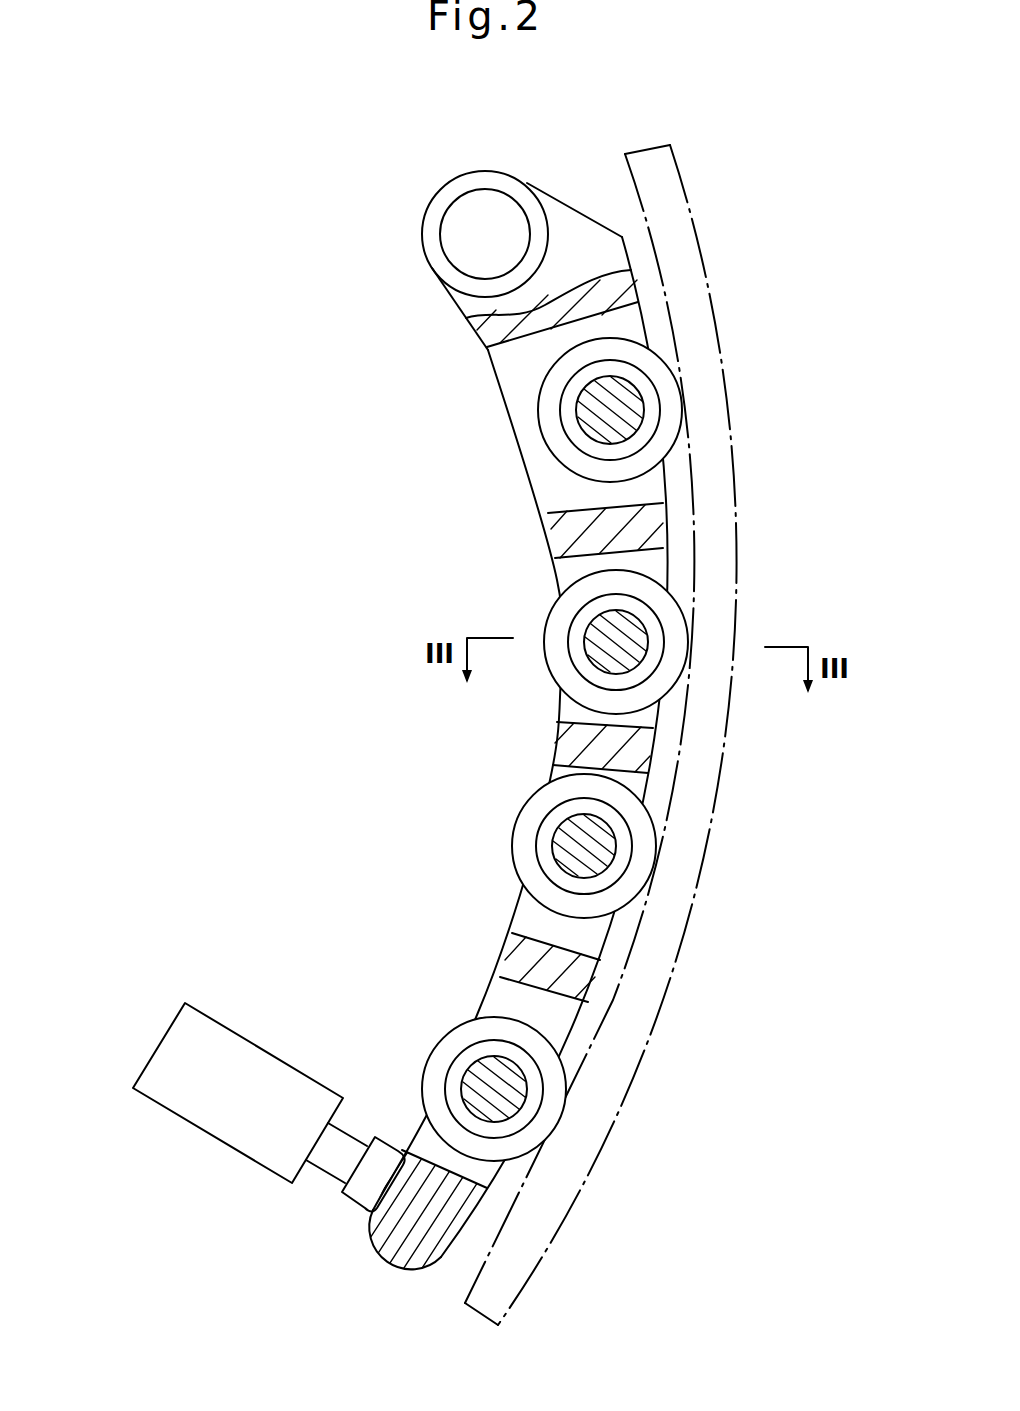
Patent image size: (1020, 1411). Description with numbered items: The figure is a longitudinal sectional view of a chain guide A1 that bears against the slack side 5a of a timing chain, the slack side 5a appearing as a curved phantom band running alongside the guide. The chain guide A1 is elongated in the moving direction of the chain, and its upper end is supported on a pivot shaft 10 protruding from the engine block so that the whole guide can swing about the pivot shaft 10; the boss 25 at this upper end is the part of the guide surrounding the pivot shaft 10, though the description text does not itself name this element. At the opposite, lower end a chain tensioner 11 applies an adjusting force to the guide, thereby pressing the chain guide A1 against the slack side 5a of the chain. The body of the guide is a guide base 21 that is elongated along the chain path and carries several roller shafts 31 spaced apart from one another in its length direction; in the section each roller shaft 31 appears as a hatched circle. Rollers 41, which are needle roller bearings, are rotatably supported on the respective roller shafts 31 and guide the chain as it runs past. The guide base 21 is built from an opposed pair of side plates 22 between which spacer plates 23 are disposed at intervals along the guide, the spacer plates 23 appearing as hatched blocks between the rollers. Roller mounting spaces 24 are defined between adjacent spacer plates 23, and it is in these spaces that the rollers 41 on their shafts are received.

The slack side 5a is at (697, 273).
The pivot shaft 10 is at (458, 215).
The boss 25 is at (440, 248).
The chain guide A1 is at (466, 328).
The guide base 21 is at (491, 737).
The side plates 22 is at (546, 473).
The spacer plates 23 is at (560, 530).
The roller mounting spaces 24 is at (523, 400).
The roller shafts 31 is at (627, 402).
The rollers 41 is at (673, 427).
The chain tensioner 11 is at (168, 1021).